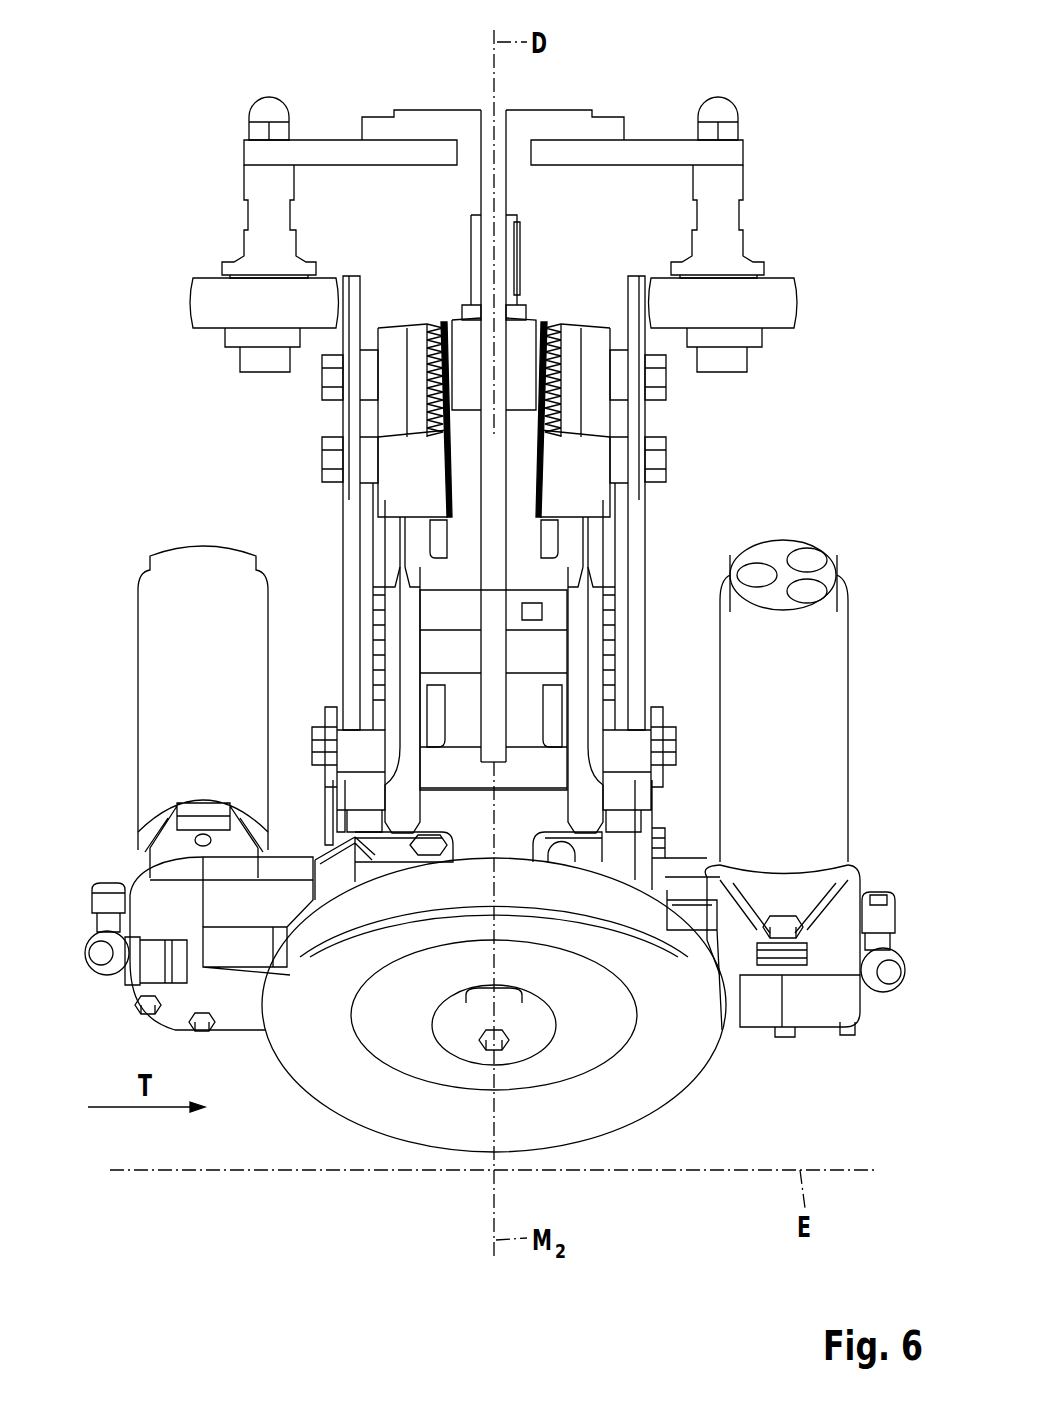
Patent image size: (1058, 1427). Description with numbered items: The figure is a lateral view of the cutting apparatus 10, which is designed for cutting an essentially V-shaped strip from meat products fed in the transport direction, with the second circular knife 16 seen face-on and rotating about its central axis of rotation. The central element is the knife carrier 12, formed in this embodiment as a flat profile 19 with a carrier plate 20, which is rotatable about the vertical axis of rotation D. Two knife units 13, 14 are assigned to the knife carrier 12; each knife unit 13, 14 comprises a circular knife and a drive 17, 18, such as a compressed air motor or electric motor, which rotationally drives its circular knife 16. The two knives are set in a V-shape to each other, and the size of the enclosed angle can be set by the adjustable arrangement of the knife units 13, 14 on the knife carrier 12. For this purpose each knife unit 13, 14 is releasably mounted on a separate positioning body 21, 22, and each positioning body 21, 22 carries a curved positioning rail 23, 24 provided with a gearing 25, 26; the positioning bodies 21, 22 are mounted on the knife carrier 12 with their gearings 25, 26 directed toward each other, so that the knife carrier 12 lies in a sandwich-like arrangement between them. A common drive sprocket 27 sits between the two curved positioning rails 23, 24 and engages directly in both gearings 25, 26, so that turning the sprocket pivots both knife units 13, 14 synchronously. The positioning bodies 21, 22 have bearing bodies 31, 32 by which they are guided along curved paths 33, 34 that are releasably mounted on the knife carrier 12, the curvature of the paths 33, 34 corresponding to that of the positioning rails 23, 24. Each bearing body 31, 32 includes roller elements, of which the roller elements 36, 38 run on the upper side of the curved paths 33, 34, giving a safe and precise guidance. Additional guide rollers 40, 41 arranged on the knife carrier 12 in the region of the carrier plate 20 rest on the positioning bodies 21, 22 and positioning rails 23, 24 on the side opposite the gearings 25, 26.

The cutting apparatus 10 is at (820, 100).
The knife carrier 12 is at (669, 100).
The knife unit 13 is at (868, 1012).
The knife unit 14 is at (234, 1054).
The circular knife 16 is at (672, 1082).
The drive 17 is at (828, 712).
The drive 18 is at (158, 711).
The flat profile 19 is at (486, 120).
The carrier plate 20 is at (420, 125).
The positioning body 21 is at (713, 455).
The positioning body 22 is at (275, 455).
The curved positioning rail 23 is at (590, 345).
The curved positioning rail 24 is at (386, 343).
The gearing 25 is at (528, 332).
The gearing 26 is at (452, 350).
The drive sprocket 27 is at (523, 333).
The bearing body 31 is at (610, 546).
The bearing body 32 is at (378, 546).
The curved path 33 is at (598, 655).
The curved path 34 is at (390, 655).
The roller element 36 is at (605, 568).
The roller element 38 is at (383, 568).
The guide roller 40 is at (780, 300).
The guide roller 41 is at (205, 300).